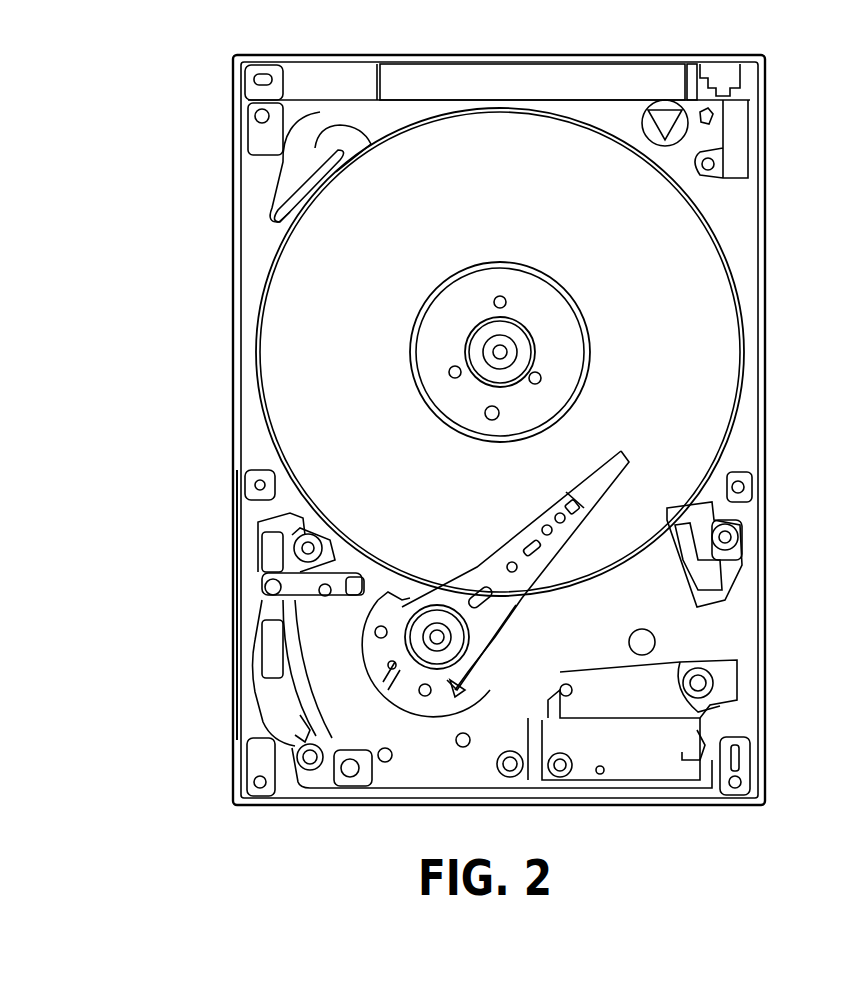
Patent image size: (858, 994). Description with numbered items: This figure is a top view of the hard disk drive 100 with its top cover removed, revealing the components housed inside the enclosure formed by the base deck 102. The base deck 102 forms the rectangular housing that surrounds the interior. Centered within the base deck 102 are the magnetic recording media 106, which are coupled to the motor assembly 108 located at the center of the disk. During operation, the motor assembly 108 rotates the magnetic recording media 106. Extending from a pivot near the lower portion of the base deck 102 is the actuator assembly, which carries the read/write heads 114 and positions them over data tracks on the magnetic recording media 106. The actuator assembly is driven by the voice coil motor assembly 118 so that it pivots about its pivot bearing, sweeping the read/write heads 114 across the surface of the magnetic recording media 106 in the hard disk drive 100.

The hard disk drive 100 is at (155, 134).
The base deck 102 is at (745, 204).
The magnetic recording media 106 is at (697, 280).
The motor assembly 108 is at (530, 298).
The read/write heads 114 is at (625, 455).
The voice coil motor assembly 118 is at (230, 600).